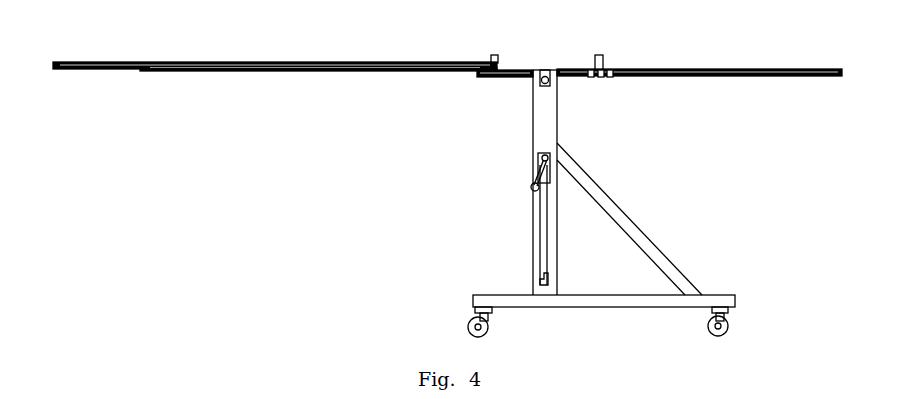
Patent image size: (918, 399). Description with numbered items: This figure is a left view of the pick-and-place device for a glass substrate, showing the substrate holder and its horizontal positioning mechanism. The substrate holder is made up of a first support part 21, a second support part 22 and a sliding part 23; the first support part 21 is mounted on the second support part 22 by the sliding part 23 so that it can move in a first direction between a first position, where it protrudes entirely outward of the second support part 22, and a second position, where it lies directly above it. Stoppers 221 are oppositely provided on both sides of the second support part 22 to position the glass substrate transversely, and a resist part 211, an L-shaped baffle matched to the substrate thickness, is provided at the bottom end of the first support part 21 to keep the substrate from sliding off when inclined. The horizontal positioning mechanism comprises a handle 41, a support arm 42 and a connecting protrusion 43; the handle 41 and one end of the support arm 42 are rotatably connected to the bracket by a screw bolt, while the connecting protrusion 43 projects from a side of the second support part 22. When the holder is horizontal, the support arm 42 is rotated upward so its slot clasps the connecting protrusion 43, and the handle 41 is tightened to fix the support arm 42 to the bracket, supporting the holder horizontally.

The first support part 21 is at (217, 62).
The resist part 211 is at (493, 56).
The second support part 22 is at (688, 73).
The stopper 221 is at (600, 56).
The sliding part 23 is at (477, 72).
The handle 41 is at (533, 183).
The support arm 42 is at (543, 207).
The connecting protrusion 43 is at (605, 77).